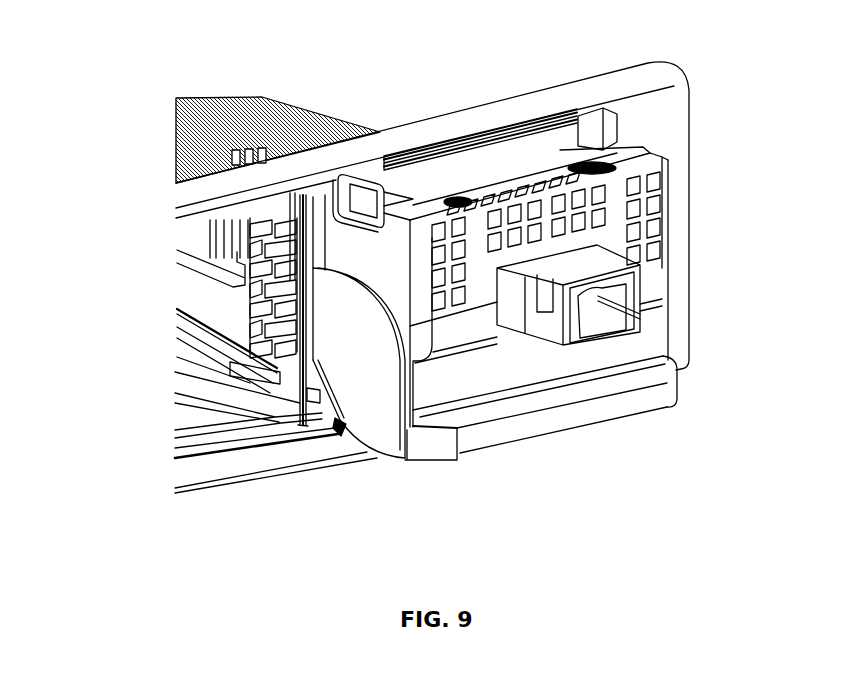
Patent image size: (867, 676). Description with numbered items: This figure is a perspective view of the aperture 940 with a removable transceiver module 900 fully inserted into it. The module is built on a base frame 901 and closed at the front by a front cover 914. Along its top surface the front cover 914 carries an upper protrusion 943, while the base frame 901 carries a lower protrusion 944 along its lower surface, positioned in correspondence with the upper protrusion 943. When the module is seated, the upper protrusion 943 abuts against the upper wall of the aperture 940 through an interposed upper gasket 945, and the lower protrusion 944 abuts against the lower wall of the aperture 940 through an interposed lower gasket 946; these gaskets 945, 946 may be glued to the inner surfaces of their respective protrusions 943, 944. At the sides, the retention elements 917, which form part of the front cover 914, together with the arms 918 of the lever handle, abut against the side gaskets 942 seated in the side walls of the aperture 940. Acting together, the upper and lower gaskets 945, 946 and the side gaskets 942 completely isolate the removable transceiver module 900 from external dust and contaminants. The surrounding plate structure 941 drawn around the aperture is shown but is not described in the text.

The removable transceiver module 900 is at (683, 163).
The base frame 901 is at (483, 373).
The front cover 914 is at (618, 168).
The retention elements 917 is at (313, 232).
The arms 918 is at (333, 358).
The aperture 940 is at (320, 193).
The cover plate 941 is at (658, 120).
The side gaskets 942 is at (227, 277).
The upper protrusion 943 is at (513, 130).
The lower protrusion 944 is at (340, 425).
The upper gasket 945 is at (466, 130).
The lower gasket 946 is at (337, 420).